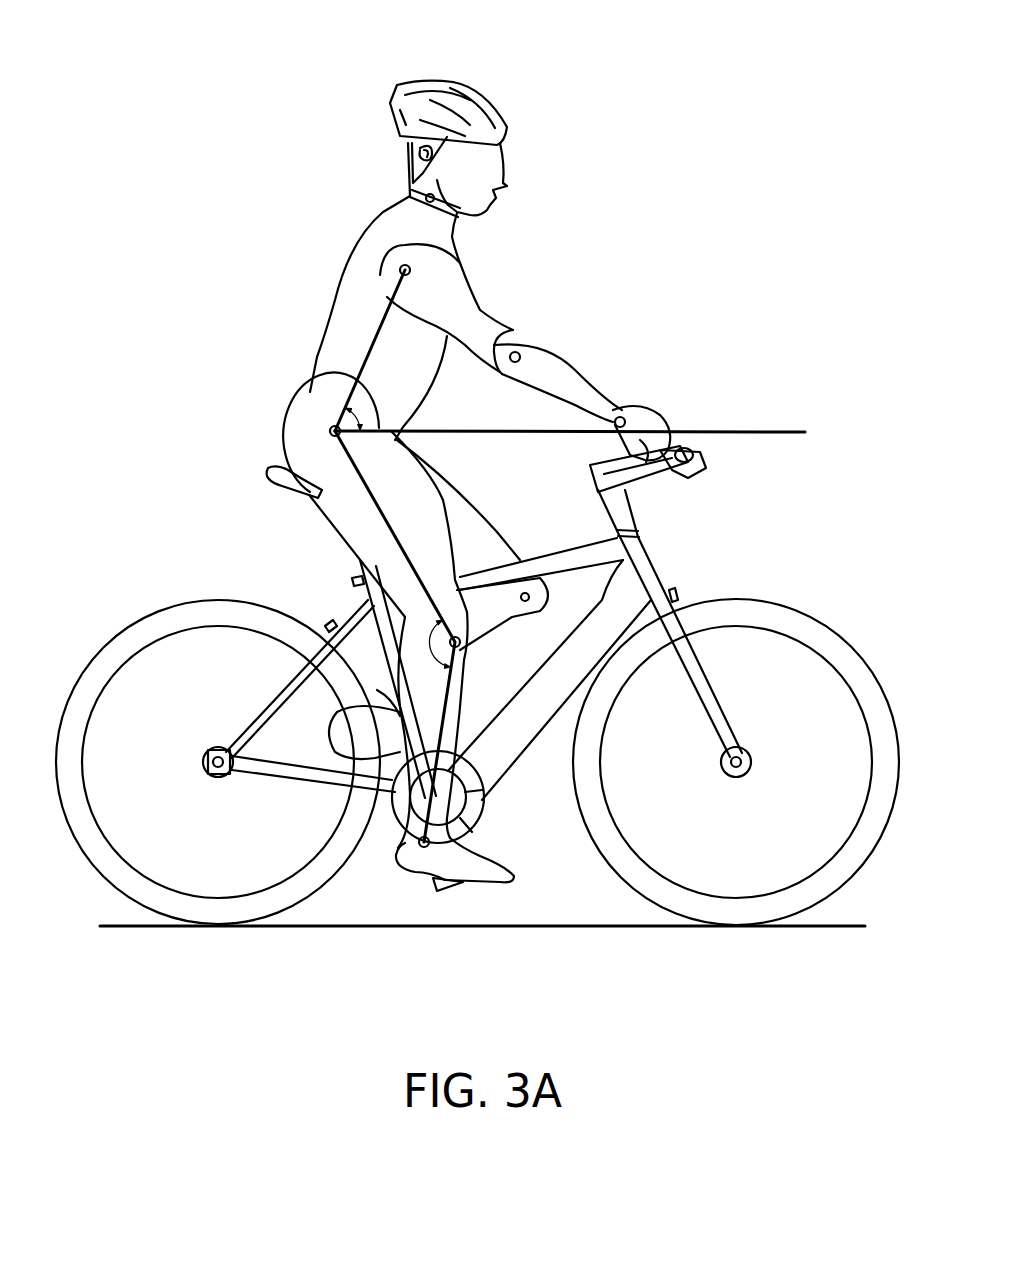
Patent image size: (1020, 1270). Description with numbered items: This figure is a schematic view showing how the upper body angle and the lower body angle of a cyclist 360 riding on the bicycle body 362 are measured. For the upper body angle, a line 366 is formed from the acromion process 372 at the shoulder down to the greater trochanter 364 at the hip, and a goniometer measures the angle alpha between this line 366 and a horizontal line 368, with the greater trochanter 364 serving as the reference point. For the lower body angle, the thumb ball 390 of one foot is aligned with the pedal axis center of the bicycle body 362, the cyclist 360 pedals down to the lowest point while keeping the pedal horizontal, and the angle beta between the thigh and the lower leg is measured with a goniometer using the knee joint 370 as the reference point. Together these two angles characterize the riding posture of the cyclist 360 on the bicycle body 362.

The cyclist 360 is at (370, 96).
The bicycle body 362 is at (667, 535).
The greater trochanter 364 is at (322, 431).
The line 366 is at (378, 322).
The horizontal line 368 is at (744, 432).
The knee joint 370 is at (463, 641).
The acromion process 372 is at (395, 262).
The thumb ball 390 is at (478, 890).